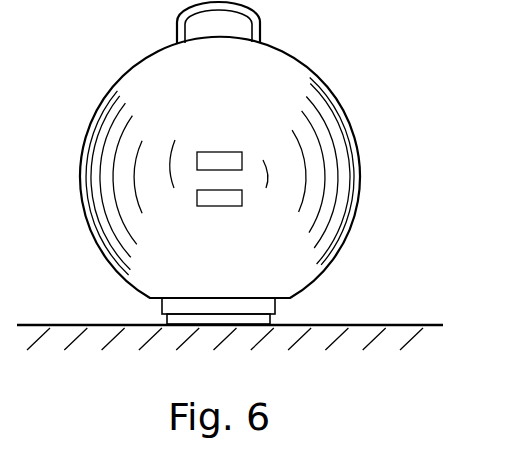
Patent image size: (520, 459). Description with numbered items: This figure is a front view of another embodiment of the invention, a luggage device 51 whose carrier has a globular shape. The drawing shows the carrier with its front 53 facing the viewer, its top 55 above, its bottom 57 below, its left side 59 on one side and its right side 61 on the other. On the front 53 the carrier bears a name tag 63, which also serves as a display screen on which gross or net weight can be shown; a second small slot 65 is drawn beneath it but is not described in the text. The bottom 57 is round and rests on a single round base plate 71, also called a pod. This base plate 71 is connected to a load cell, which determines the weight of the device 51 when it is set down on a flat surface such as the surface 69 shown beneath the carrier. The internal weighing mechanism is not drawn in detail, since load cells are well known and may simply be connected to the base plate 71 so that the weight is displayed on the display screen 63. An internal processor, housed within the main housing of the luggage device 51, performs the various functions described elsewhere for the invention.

The luggage device 51 is at (374, 124).
The front 53 is at (340, 158).
The top 55 is at (288, 50).
The bottom 57 is at (275, 313).
The left side 59 is at (82, 155).
The right side 61 is at (353, 212).
The name tag 63 is at (197, 156).
The lower slot 65 is at (197, 200).
The surface 69 is at (432, 323).
The base plate 71 is at (172, 322).